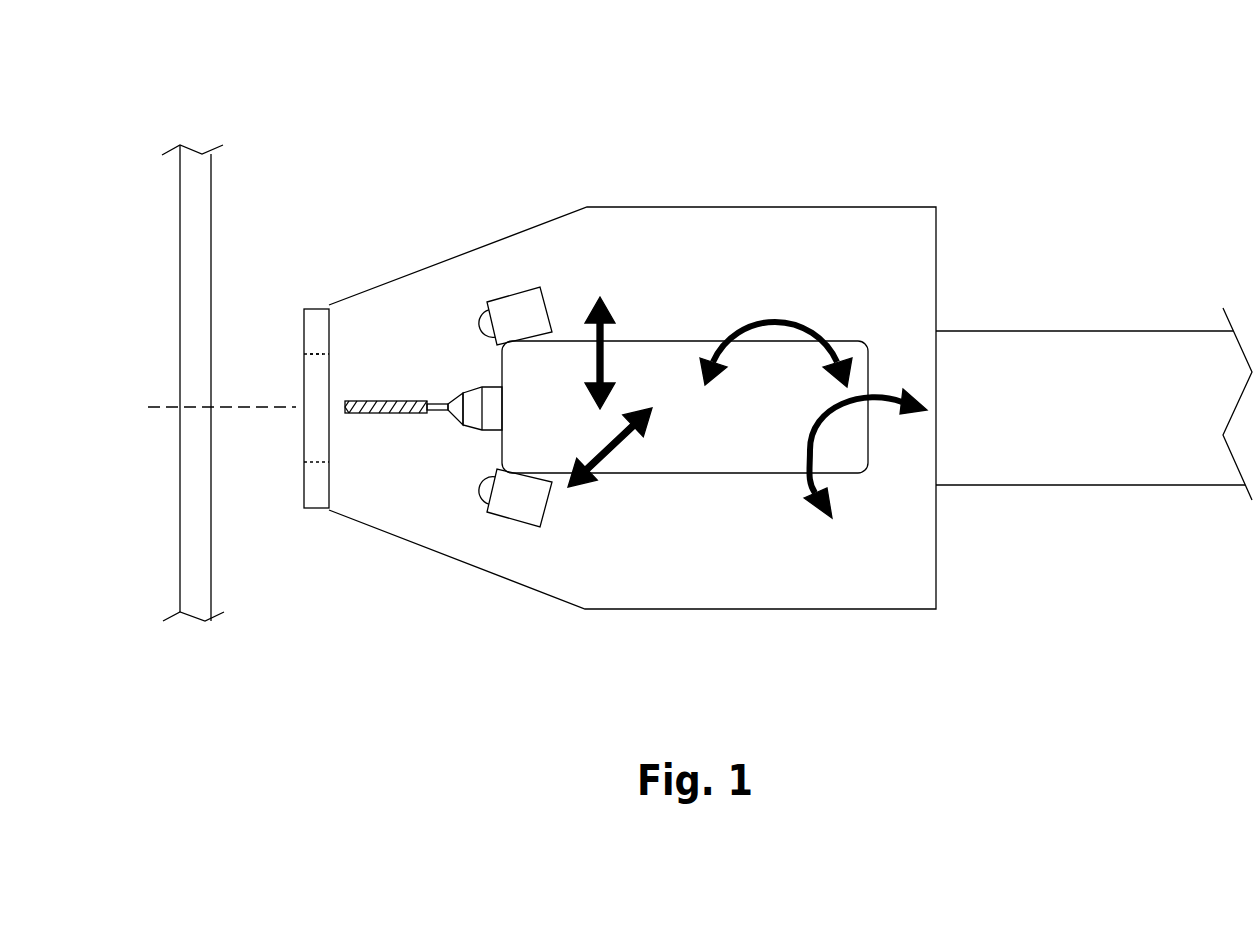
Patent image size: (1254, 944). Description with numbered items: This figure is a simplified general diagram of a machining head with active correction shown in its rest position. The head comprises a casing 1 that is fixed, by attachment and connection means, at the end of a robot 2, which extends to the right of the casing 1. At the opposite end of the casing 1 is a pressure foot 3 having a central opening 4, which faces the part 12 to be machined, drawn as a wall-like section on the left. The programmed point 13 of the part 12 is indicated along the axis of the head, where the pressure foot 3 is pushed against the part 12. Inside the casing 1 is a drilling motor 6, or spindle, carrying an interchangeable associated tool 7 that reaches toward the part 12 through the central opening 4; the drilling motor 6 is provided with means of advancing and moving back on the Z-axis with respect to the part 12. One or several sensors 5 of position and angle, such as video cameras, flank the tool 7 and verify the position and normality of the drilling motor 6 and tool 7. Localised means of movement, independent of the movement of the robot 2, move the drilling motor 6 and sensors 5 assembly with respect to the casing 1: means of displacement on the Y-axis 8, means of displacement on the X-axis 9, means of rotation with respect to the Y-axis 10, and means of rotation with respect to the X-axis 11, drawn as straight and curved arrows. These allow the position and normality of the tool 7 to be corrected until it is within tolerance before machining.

The casing 1 is at (855, 207).
The robot 2 is at (1085, 407).
The pressure foot 3 is at (314, 493).
The central opening 4 is at (315, 383).
The sensors 5 is at (518, 313).
The drilling motor 6 is at (750, 418).
The tool 7 is at (418, 412).
The means of displacement on the Y-axis 8 is at (602, 357).
The means of displacement on the X-axis 9 is at (618, 445).
The means of rotation with respect to the Y-axis 10 is at (775, 317).
The means of rotation with respect to the X-axis 11 is at (828, 428).
The part to be machined 12 is at (192, 213).
The programmed point 13 is at (192, 405).